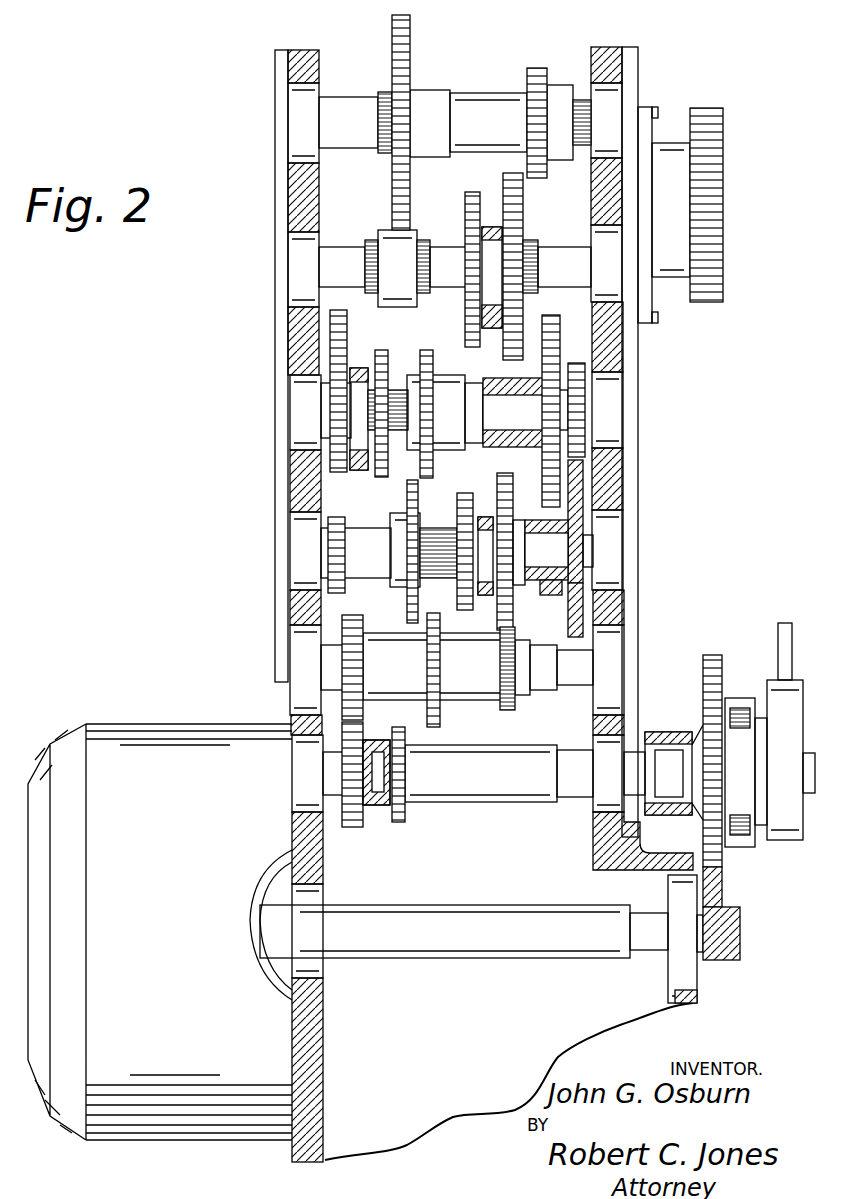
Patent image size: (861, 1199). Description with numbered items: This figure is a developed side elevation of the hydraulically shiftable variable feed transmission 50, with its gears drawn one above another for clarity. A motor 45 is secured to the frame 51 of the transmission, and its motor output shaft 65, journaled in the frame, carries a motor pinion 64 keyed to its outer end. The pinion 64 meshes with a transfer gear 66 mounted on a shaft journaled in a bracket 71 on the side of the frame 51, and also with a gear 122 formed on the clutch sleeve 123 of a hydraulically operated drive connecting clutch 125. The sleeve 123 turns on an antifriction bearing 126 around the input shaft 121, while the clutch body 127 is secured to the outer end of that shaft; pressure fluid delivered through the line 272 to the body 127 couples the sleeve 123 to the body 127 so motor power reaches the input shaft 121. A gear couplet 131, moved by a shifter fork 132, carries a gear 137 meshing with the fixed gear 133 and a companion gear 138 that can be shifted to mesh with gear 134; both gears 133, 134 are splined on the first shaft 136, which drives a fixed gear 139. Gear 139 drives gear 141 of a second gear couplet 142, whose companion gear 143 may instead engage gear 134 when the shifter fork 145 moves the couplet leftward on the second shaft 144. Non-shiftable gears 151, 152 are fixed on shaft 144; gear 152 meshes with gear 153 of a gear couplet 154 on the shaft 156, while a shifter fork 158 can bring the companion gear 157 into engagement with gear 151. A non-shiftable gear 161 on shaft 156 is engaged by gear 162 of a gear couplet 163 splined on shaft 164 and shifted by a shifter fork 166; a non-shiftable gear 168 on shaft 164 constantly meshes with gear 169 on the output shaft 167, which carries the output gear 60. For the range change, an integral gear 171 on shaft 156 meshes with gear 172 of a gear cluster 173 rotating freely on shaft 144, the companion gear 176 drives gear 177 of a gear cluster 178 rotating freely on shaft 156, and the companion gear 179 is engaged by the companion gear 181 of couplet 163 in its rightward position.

The motor 45 is at (146, 745).
The variable feed transmission 50 is at (262, 598).
The frame 51 is at (276, 72).
The output gear 60 is at (540, 72).
The motor pinion 64 is at (713, 967).
The motor output shaft 65 is at (492, 918).
The transfer gear 66 is at (720, 240).
The bracket 71 is at (643, 110).
The input shaft 121 is at (536, 773).
The gear 122 is at (703, 660).
The clutch sleeve 123 is at (732, 698).
The drive connecting clutch 125 is at (767, 850).
The antifriction bearing 126 is at (672, 735).
The clutch body 127 is at (787, 823).
The gear couplet 131 is at (383, 818).
The shifter fork 132 is at (380, 815).
The gear 133 is at (355, 663).
The gear 134 is at (436, 707).
The first shaft 136 is at (572, 668).
The gear 137 is at (351, 824).
The companion gear 138 is at (397, 812).
The fixed gear 139 is at (497, 710).
The gear 141 is at (515, 525).
The gear couplet 142 is at (471, 602).
The companion gear 143 is at (420, 512).
The second shaft 144 is at (585, 548).
The shifter fork 145 is at (485, 518).
The non-shiftable gear 151 is at (398, 593).
The non-shiftable gear 152 is at (328, 555).
The gear 153 is at (330, 333).
The gear couplet 154 is at (360, 360).
The shaft 156 is at (318, 402).
The companion gear 157 is at (380, 358).
The shifter fork 158 is at (392, 468).
The non-shiftable gear 161 is at (425, 355).
The gear 162 is at (470, 238).
The gear couplet 163 is at (493, 215).
The shaft 164 is at (330, 262).
The shifter fork 166 is at (490, 333).
The output shaft 167 is at (468, 105).
The non-shiftable gear 168 is at (385, 235).
The gear 169 is at (392, 35).
The integral gear 171 is at (580, 358).
The gear 172 is at (585, 488).
The gear cluster 173 is at (567, 608).
The companion gear 176 is at (558, 590).
The gear 177 is at (542, 412).
The gear cluster 178 is at (551, 343).
The companion gear 179 is at (540, 468).
The companion gear 181 is at (515, 208).
The line 272 is at (778, 628).